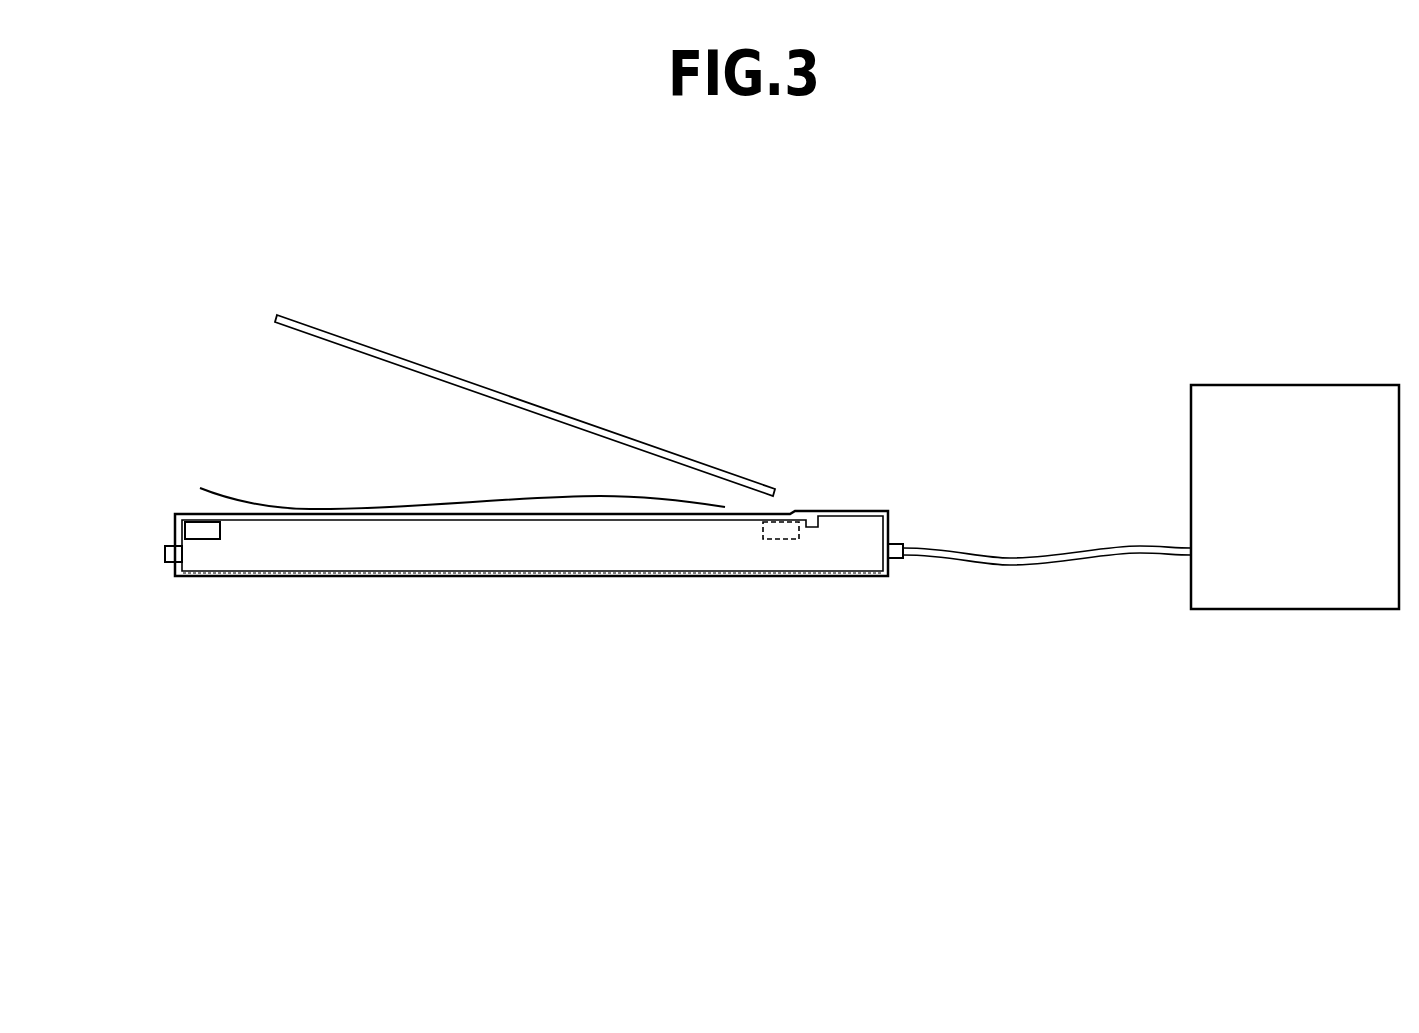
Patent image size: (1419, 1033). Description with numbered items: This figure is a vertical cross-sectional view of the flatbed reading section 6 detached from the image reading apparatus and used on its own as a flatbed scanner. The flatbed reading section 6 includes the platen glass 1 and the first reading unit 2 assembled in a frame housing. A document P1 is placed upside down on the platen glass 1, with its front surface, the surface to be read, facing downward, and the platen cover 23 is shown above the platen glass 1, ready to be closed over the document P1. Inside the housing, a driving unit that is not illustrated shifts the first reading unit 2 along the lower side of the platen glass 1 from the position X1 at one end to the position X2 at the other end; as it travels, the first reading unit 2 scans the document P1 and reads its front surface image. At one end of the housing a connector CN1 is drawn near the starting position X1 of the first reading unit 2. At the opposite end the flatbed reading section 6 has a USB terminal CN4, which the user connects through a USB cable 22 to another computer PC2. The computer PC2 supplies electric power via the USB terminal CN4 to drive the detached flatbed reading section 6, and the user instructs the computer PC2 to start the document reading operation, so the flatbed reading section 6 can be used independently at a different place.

The platen glass 1 is at (447, 527).
The first reading unit 2 is at (213, 545).
The flatbed reading section 6 is at (563, 578).
The USB cable 22 is at (1040, 567).
The platen cover 23 is at (427, 363).
The document P1 is at (231, 496).
The position X1 is at (193, 546).
The position X2 is at (777, 546).
The connector CN1 is at (165, 568).
The USB terminal CN4 is at (907, 562).
The computer PC2 is at (1295, 497).